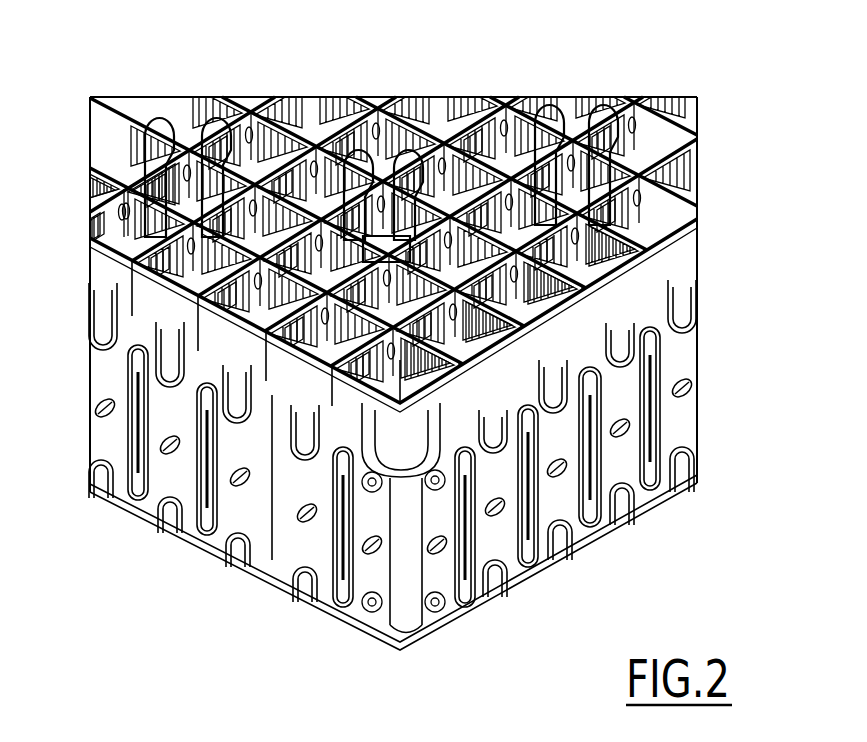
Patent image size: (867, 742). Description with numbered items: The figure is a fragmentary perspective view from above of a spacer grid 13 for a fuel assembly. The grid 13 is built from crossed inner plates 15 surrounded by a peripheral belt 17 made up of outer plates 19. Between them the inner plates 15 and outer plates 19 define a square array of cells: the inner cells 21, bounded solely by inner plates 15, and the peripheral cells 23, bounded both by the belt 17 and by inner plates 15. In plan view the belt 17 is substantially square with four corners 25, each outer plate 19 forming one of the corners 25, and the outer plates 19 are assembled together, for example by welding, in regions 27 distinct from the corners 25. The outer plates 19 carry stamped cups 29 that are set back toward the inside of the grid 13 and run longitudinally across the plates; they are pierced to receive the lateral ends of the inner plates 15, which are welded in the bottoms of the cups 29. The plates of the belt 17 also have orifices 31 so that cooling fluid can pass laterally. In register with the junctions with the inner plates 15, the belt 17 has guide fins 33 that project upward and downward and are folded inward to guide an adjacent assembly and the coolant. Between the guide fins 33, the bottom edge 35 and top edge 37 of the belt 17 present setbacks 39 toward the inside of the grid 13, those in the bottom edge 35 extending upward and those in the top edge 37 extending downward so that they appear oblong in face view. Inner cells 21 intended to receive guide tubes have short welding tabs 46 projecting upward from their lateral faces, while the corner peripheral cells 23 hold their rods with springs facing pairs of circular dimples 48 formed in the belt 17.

The grid 13 is at (138, 68).
The inner plates 15 is at (352, 110).
The peripheral belt 17 is at (593, 580).
The outer plates 19 is at (200, 540).
The inner cells 21 is at (522, 110).
The peripheral cells 23 is at (683, 167).
The corners 25 is at (405, 605).
The regions 27 is at (237, 573).
The cups 29 is at (147, 498).
The orifices 31 is at (623, 425).
The guide fins 33 is at (270, 385).
The bottom edge 35 is at (496, 623).
The top edge 37 is at (463, 410).
The setbacks 39 is at (500, 430).
The welding tabs 46 is at (408, 167).
The circular dimples 48 is at (380, 615).